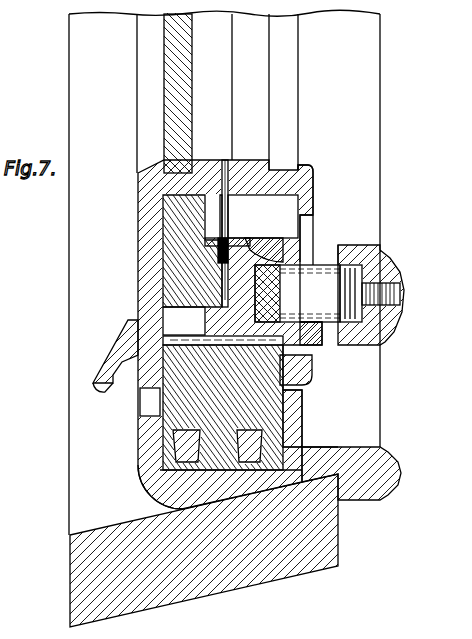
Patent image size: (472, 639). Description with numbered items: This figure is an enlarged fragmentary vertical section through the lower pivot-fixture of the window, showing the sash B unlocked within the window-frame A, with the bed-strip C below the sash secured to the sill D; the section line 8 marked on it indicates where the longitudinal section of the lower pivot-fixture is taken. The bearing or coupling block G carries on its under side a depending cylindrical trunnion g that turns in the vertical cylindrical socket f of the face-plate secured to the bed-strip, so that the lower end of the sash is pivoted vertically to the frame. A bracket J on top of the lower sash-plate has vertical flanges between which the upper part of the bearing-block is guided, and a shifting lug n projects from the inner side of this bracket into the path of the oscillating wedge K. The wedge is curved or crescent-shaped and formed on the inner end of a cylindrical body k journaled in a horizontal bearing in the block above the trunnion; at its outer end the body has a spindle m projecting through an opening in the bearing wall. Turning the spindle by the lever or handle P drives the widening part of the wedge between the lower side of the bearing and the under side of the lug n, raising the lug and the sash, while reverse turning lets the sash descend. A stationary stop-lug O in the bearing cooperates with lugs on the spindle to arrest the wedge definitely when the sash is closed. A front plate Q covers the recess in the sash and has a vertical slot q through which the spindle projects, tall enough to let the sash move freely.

The window-frame A is at (72, 48).
The sash B is at (288, 50).
The bracket J is at (165, 227).
The shifting lug n is at (190, 273).
The opening 8 is at (226, 160).
The cylindrical body k is at (236, 238).
The stop-lug O is at (313, 200).
The vertical slot q is at (316, 245).
The lever or handle P is at (360, 245).
The spindle m is at (297, 293).
The oscillating wedge K is at (267, 293).
The front plate Q is at (315, 370).
The vertical cylindrical socket f is at (292, 412).
The bearing or coupling block G is at (200, 346).
The cylindrical pivot or trunnion g is at (160, 424).
The bed or strip C is at (283, 482).
The sill D is at (70, 574).